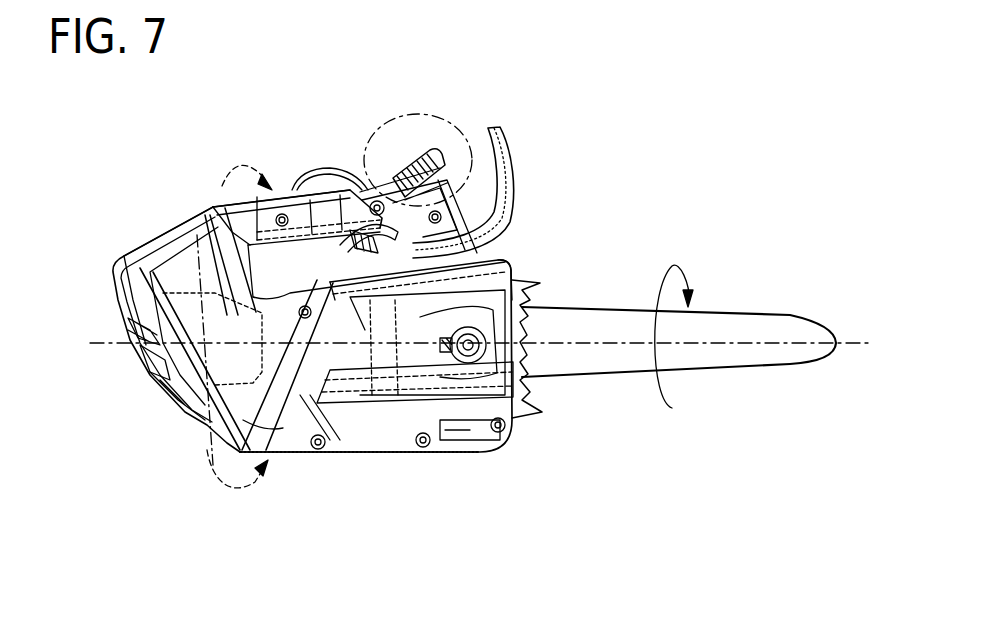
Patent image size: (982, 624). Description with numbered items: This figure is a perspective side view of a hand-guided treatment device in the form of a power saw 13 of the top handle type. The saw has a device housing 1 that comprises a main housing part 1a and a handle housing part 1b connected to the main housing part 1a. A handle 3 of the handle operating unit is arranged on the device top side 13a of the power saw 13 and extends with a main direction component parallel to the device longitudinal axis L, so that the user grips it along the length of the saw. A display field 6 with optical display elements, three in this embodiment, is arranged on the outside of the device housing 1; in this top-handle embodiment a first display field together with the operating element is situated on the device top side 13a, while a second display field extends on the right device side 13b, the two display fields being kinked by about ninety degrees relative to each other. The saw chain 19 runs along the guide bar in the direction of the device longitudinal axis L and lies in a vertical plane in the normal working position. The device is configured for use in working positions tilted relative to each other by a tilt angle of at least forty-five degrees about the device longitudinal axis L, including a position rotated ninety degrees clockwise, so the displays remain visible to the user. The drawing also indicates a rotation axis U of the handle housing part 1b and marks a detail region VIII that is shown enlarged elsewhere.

The device housing 1 is at (448, 300).
The main housing part 1a is at (170, 388).
The handle housing part 1b is at (286, 192).
The handle 3 is at (320, 203).
The display field 6 is at (414, 162).
The power saw 13 is at (352, 463).
The device top side 13a is at (232, 207).
The right device side 13b is at (540, 252).
The saw chain 19 is at (617, 378).
The device longitudinal axis L is at (100, 346).
The rotation axis U is at (220, 473).
The detail view VIII is at (440, 118).